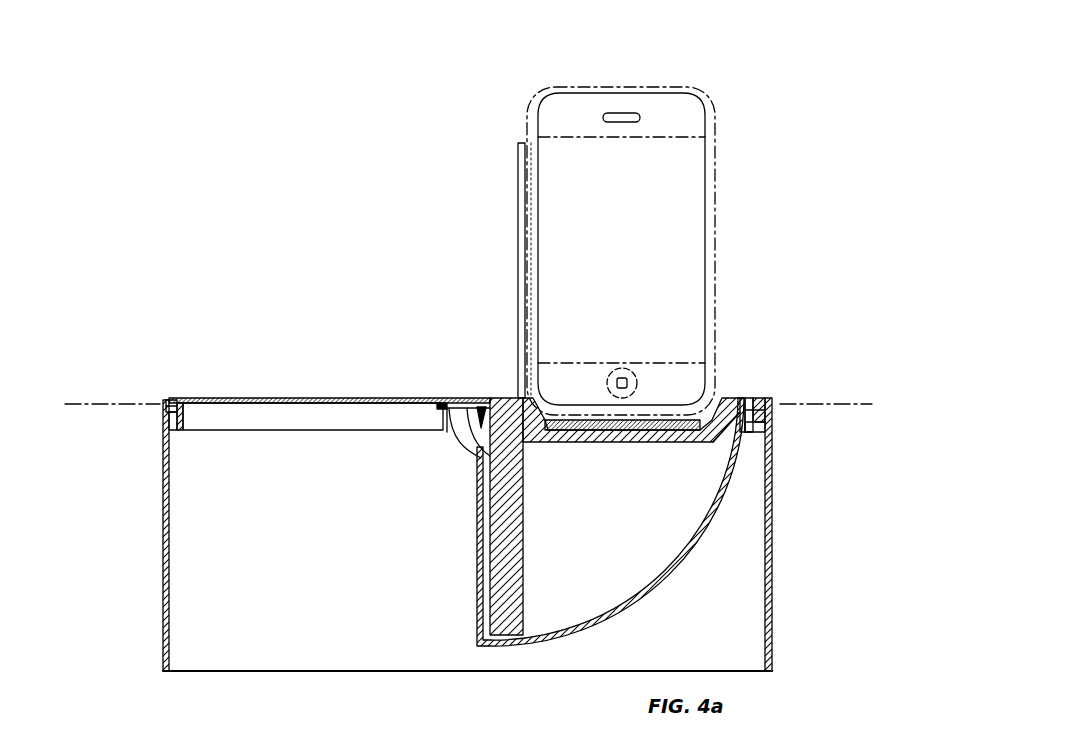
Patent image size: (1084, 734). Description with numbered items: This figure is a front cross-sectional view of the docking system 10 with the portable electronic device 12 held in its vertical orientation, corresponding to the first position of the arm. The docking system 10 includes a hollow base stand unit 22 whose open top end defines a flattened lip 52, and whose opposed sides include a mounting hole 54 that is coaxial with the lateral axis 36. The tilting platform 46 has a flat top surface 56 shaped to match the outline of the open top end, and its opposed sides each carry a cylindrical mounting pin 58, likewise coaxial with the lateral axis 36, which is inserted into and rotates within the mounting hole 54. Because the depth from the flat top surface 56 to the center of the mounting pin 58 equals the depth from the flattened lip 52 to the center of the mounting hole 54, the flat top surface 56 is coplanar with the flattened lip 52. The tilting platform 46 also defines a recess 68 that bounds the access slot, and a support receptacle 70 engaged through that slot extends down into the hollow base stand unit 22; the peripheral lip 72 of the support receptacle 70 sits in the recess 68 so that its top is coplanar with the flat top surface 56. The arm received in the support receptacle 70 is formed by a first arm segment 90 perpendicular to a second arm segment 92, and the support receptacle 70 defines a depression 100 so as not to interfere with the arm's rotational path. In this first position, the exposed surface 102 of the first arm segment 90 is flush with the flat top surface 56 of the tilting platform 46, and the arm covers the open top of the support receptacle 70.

The docking system 10 is at (875, 69).
The portable electronic device 12 is at (653, 91).
The base stand unit 22 is at (773, 500).
The lateral axis 36 is at (862, 405).
The tilting platform 46 is at (275, 412).
The flattened lip 52 is at (170, 398).
The mounting hole 54 is at (170, 428).
The flat top surface 56 is at (222, 398).
The mounting pin 58 is at (168, 401).
The recess 68 is at (433, 420).
The support receptacle 70 is at (693, 553).
The peripheral lip 72 is at (450, 397).
The first arm segment 90 is at (732, 397).
The second arm segment 92 is at (507, 597).
The depression 100 is at (481, 407).
The exposed surface 102 is at (497, 396).